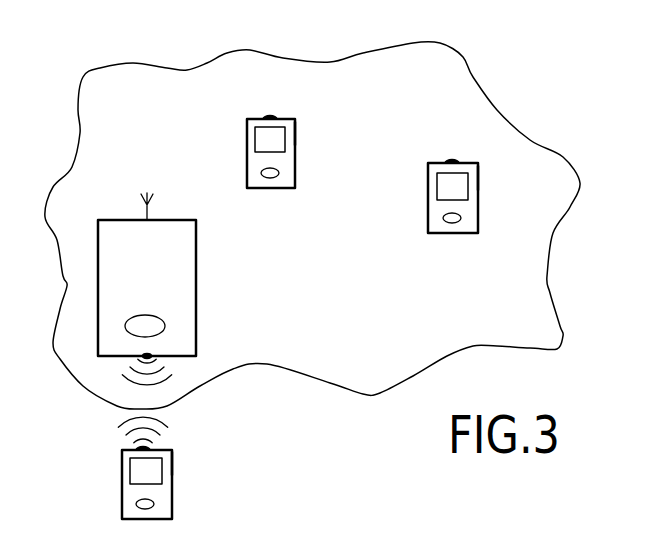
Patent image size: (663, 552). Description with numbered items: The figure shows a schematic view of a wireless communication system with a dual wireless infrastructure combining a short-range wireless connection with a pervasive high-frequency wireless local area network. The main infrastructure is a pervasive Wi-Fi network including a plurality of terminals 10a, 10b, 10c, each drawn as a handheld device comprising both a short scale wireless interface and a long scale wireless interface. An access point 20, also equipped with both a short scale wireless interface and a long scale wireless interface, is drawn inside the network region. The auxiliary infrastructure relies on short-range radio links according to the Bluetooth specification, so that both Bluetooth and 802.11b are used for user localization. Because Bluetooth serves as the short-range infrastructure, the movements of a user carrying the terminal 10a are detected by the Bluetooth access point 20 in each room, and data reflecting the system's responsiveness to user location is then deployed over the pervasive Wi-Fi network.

The terminal 10a is at (132, 493).
The terminal 10b is at (288, 168).
The terminal 10c is at (467, 228).
The access point 20 is at (170, 296).